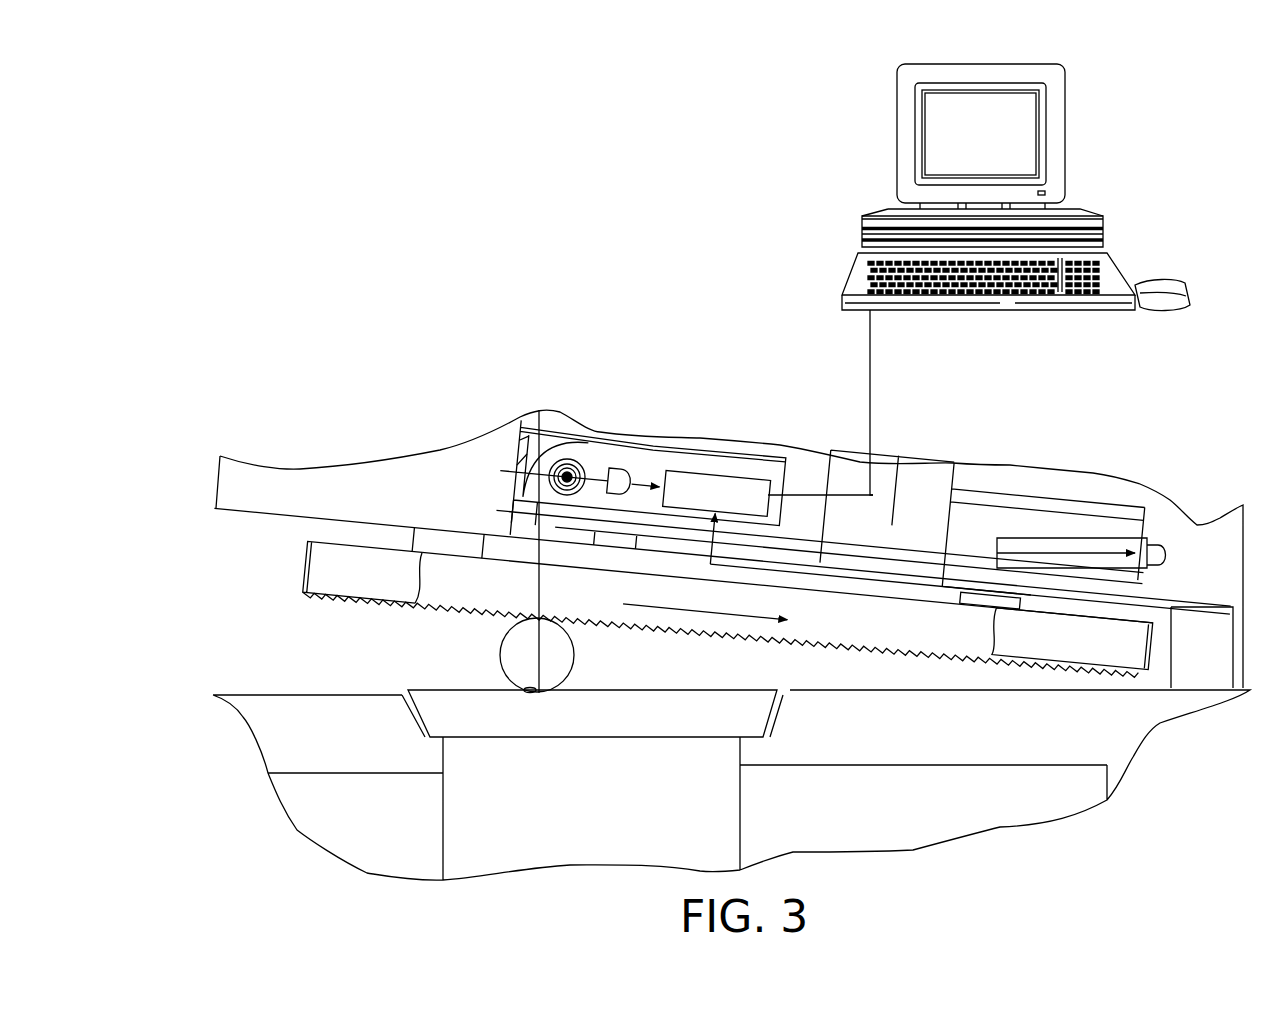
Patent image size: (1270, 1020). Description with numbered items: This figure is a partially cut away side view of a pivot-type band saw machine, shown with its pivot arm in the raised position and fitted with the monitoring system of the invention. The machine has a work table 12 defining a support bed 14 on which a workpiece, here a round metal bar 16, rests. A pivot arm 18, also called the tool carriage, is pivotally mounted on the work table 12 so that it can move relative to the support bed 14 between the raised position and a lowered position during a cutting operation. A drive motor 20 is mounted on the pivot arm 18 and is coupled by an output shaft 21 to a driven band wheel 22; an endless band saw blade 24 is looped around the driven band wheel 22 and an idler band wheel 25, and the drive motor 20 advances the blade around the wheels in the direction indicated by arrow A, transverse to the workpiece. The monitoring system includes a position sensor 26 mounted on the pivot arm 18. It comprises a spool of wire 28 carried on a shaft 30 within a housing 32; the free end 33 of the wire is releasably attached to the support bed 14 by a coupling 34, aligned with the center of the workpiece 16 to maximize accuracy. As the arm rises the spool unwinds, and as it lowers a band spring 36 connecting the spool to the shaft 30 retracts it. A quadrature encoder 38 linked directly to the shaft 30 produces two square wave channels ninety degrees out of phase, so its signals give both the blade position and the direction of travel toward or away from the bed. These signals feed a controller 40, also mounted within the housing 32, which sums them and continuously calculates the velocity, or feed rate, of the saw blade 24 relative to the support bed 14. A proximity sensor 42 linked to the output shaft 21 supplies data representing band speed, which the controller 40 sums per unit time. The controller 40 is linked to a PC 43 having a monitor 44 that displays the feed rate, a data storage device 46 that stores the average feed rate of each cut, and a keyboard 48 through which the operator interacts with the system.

The work table 12 is at (350, 846).
The support bed 14 is at (614, 722).
The round metal bar 16 is at (556, 655).
The pivot arm 18 is at (362, 470).
The drive motor 20 is at (937, 524).
The output shaft 21 is at (975, 600).
The driven band wheel 22 is at (1065, 660).
The band saw blade 24 is at (305, 560).
The idler band wheel 25 is at (388, 563).
The position sensor 26 is at (503, 440).
The spool of wire 28 is at (545, 550).
The shaft 30 is at (568, 459).
The housing 32 is at (518, 498).
The free end 33 is at (520, 692).
The coupling 34 is at (539, 693).
The band spring 36 is at (518, 477).
The quadrature encoder 38 is at (620, 468).
The controller 40 is at (706, 480).
The proximity sensor 42 is at (1166, 556).
The PC 43 is at (997, 271).
The monitor 44 is at (942, 117).
The data storage device 46 is at (862, 236).
The keyboard 48 is at (1005, 295).
The arrow A is at (711, 608).